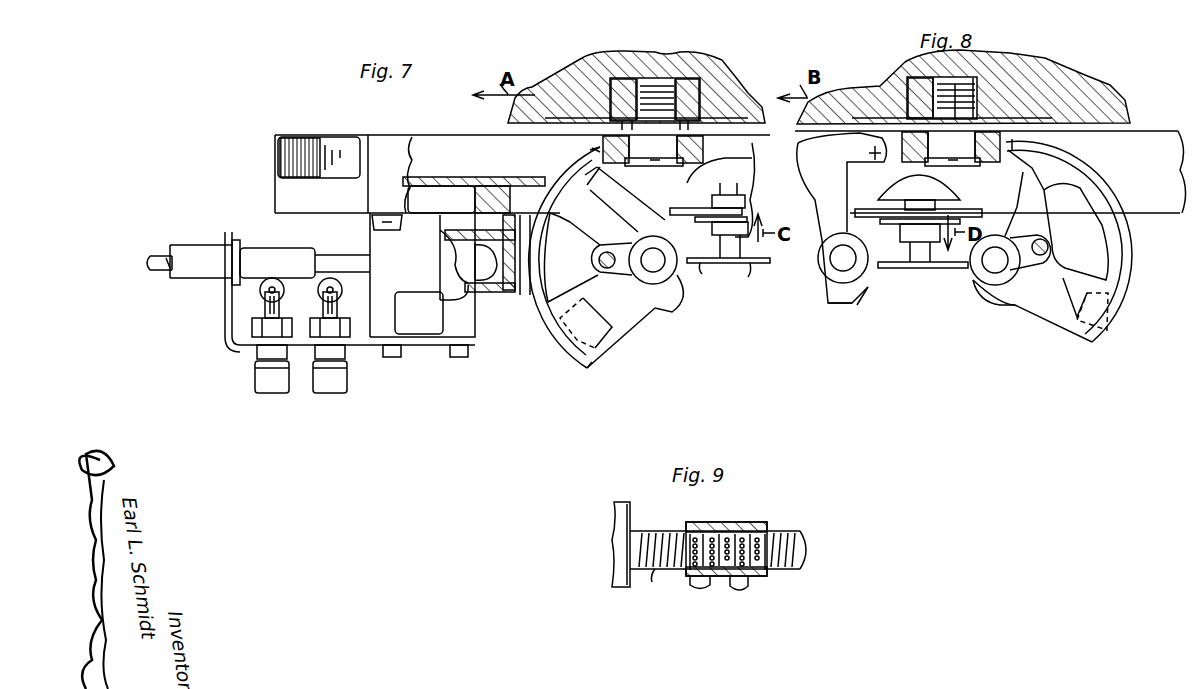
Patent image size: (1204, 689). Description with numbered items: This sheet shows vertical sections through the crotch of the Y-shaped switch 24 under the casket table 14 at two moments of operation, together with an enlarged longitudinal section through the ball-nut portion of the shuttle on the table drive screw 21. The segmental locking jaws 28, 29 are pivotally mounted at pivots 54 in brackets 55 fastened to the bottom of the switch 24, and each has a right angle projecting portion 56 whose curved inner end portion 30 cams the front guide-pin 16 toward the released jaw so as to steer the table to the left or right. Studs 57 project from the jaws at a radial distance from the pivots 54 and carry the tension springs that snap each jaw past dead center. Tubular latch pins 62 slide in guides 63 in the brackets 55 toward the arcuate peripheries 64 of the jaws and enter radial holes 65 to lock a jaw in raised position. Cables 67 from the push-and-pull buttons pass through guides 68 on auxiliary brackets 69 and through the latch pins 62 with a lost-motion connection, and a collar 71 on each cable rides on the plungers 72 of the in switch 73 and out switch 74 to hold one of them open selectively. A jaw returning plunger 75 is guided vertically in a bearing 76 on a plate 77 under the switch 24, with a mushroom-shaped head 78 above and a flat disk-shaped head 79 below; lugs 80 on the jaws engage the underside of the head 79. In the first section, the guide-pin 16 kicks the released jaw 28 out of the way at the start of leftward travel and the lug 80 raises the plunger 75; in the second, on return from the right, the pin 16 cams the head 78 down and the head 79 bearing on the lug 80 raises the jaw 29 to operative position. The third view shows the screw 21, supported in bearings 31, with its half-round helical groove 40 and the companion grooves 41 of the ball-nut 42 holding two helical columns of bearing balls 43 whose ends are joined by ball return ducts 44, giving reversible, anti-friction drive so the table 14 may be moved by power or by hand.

In FIG. 7, the casket table 14 is at (728, 76).
In FIG. 8, the casket table 14 is at (1040, 62).
In FIG. 7, the front guide-pin 16 is at (681, 171).
In FIG. 8, the front guide-pin 16 is at (990, 166).
In FIG. 9, the table drive screw 21 is at (805, 543).
In FIG. 7, the Y-shaped switch 24 is at (407, 137).
In FIG. 8, the Y-shaped switch 24 is at (1160, 143).
In FIG. 7, the locking jaw 28 is at (560, 357).
In FIG. 8, the locking jaw 28 is at (808, 168).
In FIG. 8, the locking jaw 29 is at (1118, 268).
In FIG. 7, the curved inner end portions 30 is at (590, 150).
In FIG. 8, the curved inner end portions 30 is at (875, 153).
In FIG. 9, the bearings 31 is at (612, 553).
In FIG. 9, the helical groove 40 is at (655, 575).
In FIG. 9, the helical grooves 41 is at (742, 523).
In FIG. 9, the ball-nut 42 is at (727, 522).
In FIG. 9, the bearing balls 43 is at (690, 534).
In FIG. 9, the ball return ducts 44 is at (753, 588).
In FIG. 7, the pivots 54 is at (650, 275).
In FIG. 8, the pivots 54 is at (832, 259).
In FIG. 7, the brackets 55 is at (370, 236).
In FIG. 7, the right angle projecting portions 56 is at (598, 180).
In FIG. 8, the right angle projecting portions 56 is at (855, 168).
In FIG. 7, the studs 57 is at (597, 260).
In FIG. 8, the studs 57 is at (1050, 247).
In FIG. 7, the tubular latch pins 62 is at (488, 300).
In FIG. 7, the guides 63 is at (432, 290).
In FIG. 7, the arcuate peripheries 64 is at (553, 328).
In FIG. 8, the arcuate peripheries 64 is at (806, 156).
In FIG. 7, the radial holes 65 is at (598, 348).
In FIG. 8, the radial holes 65 is at (1072, 340).
In FIG. 7, the cables 67 is at (158, 255).
In FIG. 7, the guides 68 is at (190, 285).
In FIG. 7, the auxiliary brackets 69 is at (228, 232).
In FIG. 7, the collar 71 is at (287, 252).
In FIG. 7, the plungers 72 is at (268, 282).
In FIG. 7, the in switch 73 is at (272, 390).
In FIG. 7, the out switch 74 is at (332, 390).
In FIG. 7, the jaw returning plunger 75 is at (722, 242).
In FIG. 8, the jaw returning plunger 75 is at (912, 254).
In FIG. 7, the bearing 76 is at (700, 222).
In FIG. 8, the bearing 76 is at (902, 236).
In FIG. 7, the plate 77 is at (706, 206).
In FIG. 8, the plate 77 is at (962, 210).
In FIG. 7, the mushroom-shaped head 78 is at (716, 176).
In FIG. 8, the mushroom-shaped head 78 is at (942, 186).
In FIG. 7, the disk-shaped head 79 is at (752, 265).
In FIG. 8, the disk-shaped head 79 is at (895, 270).
In FIG. 7, the lugs 80 is at (687, 282).
In FIG. 8, the lugs 80 is at (857, 305).